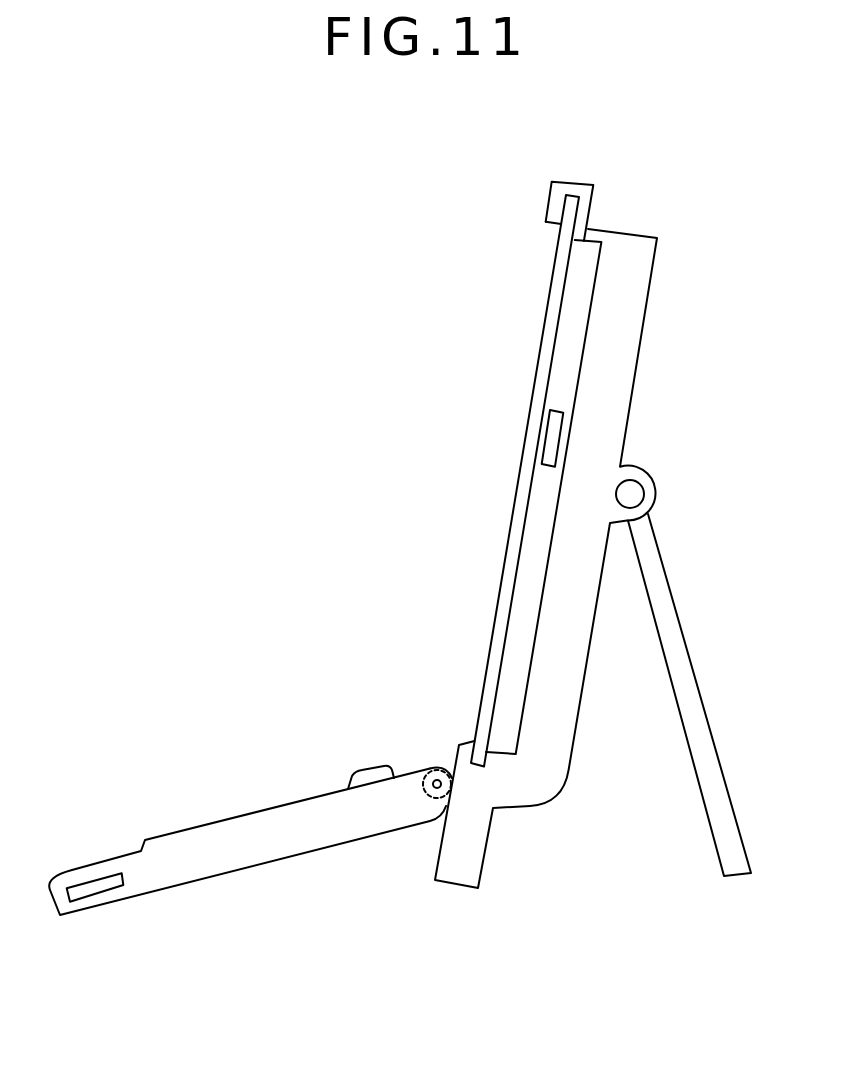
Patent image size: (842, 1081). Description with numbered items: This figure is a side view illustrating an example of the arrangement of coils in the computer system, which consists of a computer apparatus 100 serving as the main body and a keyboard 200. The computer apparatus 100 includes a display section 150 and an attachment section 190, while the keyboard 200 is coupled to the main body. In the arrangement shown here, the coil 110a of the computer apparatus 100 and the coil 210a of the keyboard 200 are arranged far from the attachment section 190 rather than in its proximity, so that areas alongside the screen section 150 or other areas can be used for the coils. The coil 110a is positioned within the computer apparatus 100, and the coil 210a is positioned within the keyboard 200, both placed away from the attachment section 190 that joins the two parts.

The computer apparatus 100 is at (641, 233).
The display section 150 is at (530, 407).
The coil 110a is at (560, 437).
The attachment section 190 is at (425, 770).
The keyboard 200 is at (255, 811).
The coil 210a is at (98, 896).